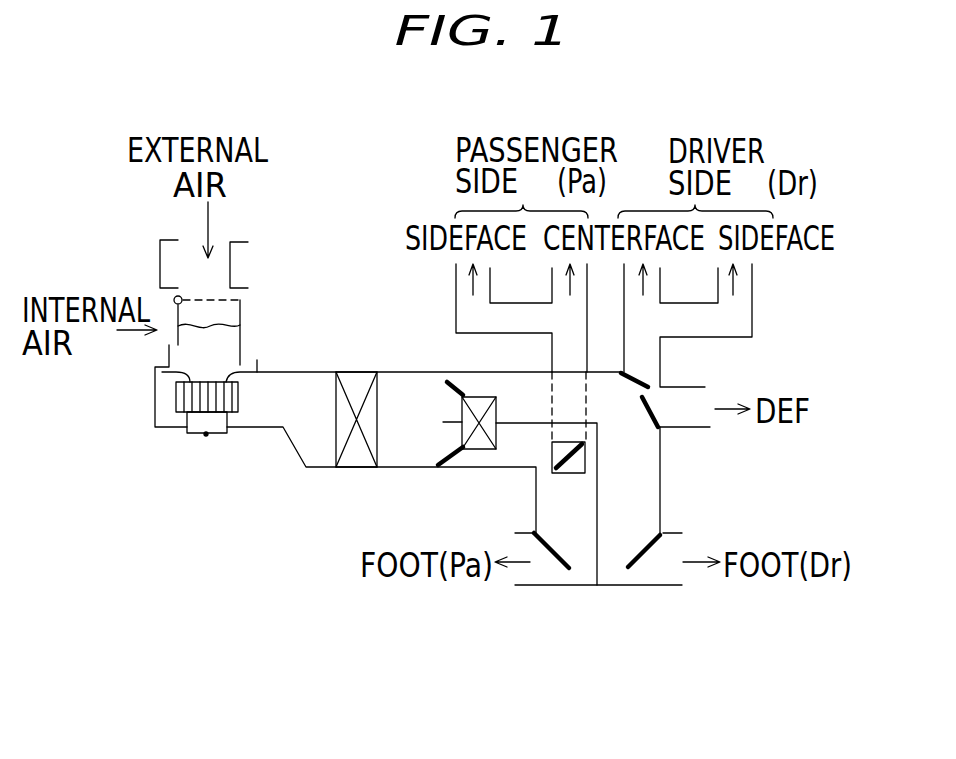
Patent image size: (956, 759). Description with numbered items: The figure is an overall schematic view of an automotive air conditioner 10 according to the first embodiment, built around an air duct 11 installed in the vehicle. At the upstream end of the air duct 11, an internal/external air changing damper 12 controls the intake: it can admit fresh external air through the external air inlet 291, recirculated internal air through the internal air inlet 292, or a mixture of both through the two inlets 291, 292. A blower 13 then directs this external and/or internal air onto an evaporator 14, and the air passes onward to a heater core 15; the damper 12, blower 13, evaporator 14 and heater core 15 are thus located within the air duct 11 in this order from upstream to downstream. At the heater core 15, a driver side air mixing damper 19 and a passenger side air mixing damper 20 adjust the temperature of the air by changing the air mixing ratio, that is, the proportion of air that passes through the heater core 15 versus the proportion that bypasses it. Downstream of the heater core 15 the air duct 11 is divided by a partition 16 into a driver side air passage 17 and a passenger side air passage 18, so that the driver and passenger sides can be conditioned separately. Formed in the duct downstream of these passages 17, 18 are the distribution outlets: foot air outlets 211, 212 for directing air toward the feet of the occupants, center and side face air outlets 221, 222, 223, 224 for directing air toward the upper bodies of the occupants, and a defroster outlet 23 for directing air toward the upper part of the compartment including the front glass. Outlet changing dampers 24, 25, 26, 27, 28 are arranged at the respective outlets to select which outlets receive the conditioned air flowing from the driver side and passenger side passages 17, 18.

The air conditioner 10 is at (257, 494).
The air duct 11 is at (322, 372).
The internal/external air changing damper 12 is at (240, 325).
The blower 13 is at (192, 437).
The evaporator 14 is at (340, 467).
The heater core 15 is at (483, 450).
The partition 16 is at (503, 420).
The driver side air passage 17 is at (530, 403).
The passenger side air passage 18 is at (522, 455).
The driver side air mixing damper 19 is at (452, 370).
The passenger side air mixing damper 20 is at (438, 470).
The center face air outlet 221 is at (650, 282).
The side face air outlet 222 is at (752, 282).
The center face air outlet 223 is at (552, 282).
The side face air outlet 224 is at (456, 280).
The defroster outlet 23 is at (708, 398).
The outlet changing damper 24 is at (648, 538).
The outlet changing damper 25 is at (555, 557).
The outlet changing damper 26 is at (638, 378).
The outlet changing damper 27 is at (568, 465).
The outlet changing damper 28 is at (658, 415).
The foot air outlet 211 is at (668, 573).
The foot air outlet 212 is at (525, 573).
The external air inlet 291 is at (232, 256).
The internal air inlet 292 is at (160, 290).